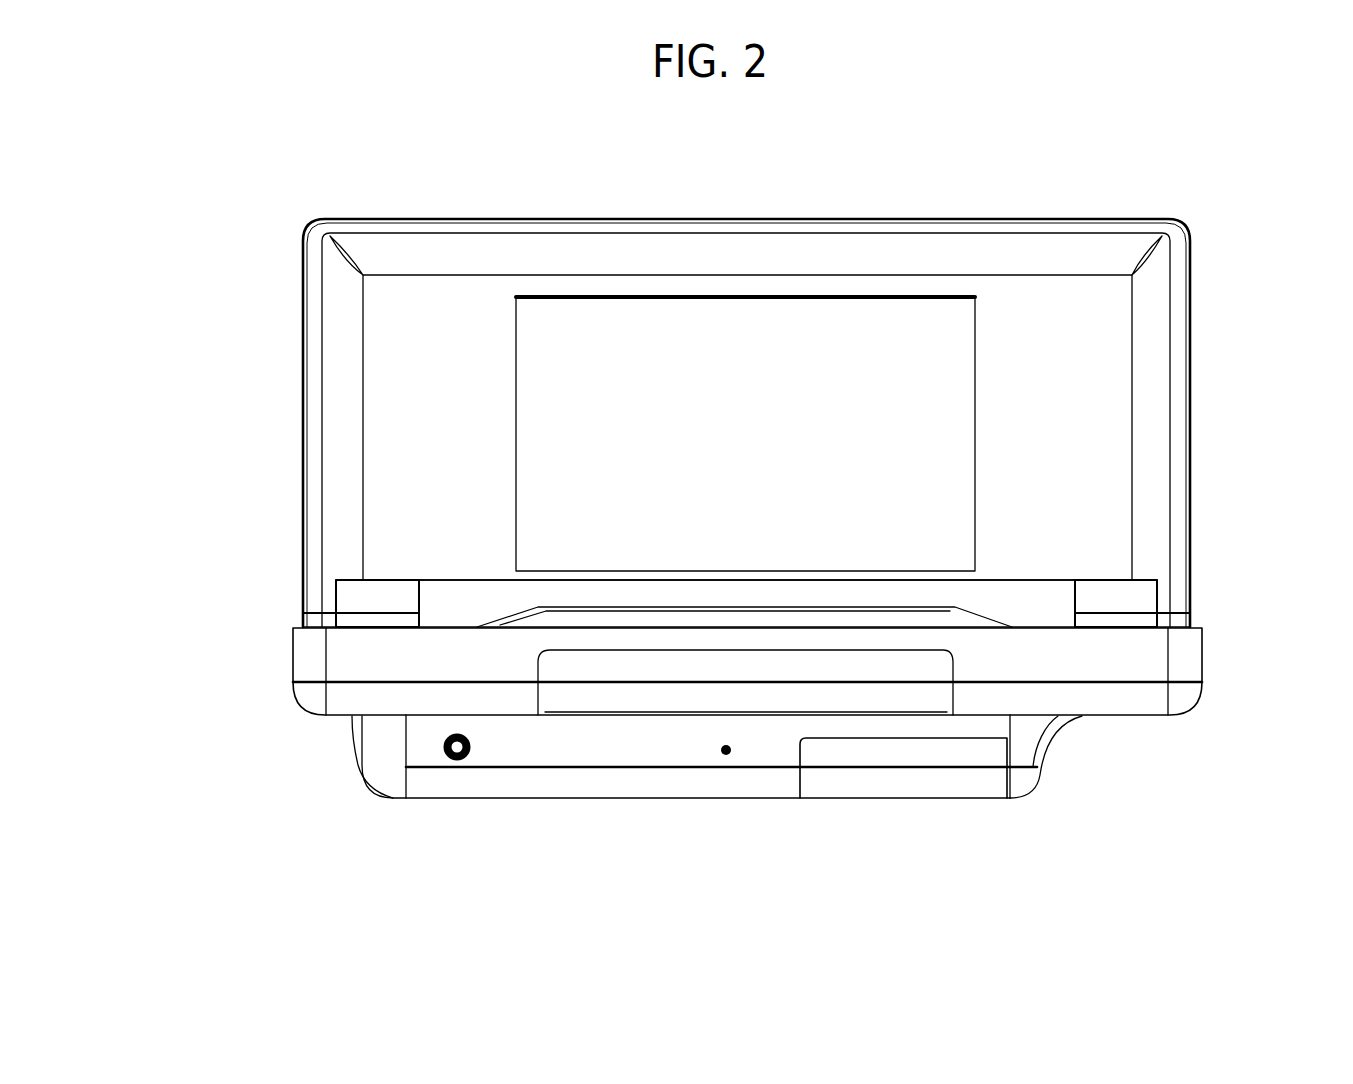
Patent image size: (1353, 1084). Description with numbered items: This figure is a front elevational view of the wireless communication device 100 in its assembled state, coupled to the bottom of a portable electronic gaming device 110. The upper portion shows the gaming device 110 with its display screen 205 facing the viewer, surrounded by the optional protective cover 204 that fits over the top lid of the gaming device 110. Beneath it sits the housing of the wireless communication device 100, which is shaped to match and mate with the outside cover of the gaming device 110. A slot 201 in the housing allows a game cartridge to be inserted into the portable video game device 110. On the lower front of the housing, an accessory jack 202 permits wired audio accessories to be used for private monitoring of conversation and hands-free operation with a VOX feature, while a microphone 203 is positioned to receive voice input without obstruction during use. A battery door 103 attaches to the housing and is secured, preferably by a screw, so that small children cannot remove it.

The wireless communication device 100 is at (338, 807).
The portable electronic gaming device 110 is at (382, 448).
The protective cover 204 is at (1190, 488).
The display screen 205 is at (738, 410).
The slot 201 is at (583, 682).
The accessory jack 202 is at (470, 748).
The microphone 203 is at (724, 757).
The battery door 103 is at (937, 771).